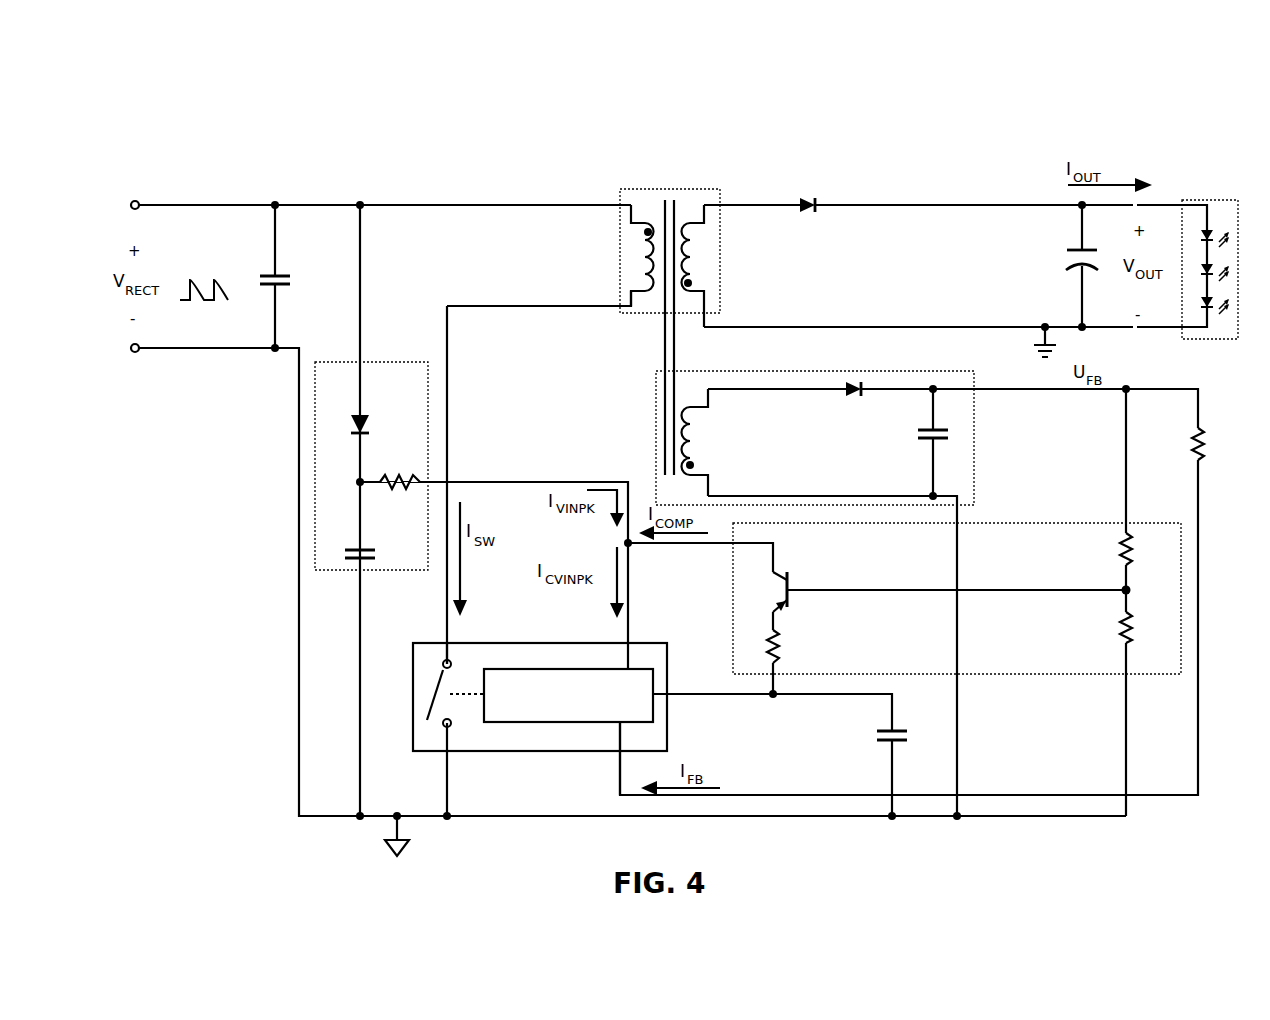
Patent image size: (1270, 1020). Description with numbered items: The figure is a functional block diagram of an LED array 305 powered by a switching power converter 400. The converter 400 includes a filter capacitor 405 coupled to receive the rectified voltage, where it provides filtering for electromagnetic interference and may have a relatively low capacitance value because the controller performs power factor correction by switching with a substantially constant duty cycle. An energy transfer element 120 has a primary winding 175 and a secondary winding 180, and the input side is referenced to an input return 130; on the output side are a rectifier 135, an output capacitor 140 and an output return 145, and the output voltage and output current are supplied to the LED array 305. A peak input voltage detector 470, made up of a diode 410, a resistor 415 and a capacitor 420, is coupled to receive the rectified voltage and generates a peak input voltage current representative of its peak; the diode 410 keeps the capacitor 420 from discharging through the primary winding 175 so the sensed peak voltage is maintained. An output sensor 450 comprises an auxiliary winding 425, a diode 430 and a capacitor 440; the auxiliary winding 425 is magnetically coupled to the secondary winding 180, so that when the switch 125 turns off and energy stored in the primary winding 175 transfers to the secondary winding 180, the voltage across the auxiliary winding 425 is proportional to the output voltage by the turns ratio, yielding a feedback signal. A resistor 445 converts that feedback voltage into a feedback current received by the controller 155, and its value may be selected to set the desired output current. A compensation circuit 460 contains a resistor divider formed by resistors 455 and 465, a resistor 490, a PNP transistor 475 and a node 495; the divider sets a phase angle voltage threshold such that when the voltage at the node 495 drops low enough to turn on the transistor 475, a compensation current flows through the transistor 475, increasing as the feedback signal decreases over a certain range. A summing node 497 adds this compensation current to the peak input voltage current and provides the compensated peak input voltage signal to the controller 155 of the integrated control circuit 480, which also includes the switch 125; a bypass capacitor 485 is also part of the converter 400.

The switching power converter 400 is at (1033, 109).
The filter capacitor 405 is at (288, 262).
The peak input voltage detector 470 is at (371, 443).
The diode 410 is at (373, 412).
The resistor 415 is at (400, 468).
The capacitor 420 is at (373, 547).
The energy transfer element 120 is at (663, 311).
The primary winding 175 is at (635, 255).
The secondary winding 180 is at (705, 268).
The rectifier 135 is at (806, 192).
The output capacitor 140 is at (1063, 258).
The output return 145 is at (1027, 355).
The LED array 305 is at (1212, 197).
The output sensor 450 is at (851, 438).
The auxiliary winding 425 is at (705, 435).
The diode 430 is at (855, 403).
The capacitor 440 is at (924, 446).
The resistor 445 is at (1187, 450).
The compensation circuit 460 is at (957, 575).
The transistor 475 is at (817, 560).
The resistor 490 is at (790, 647).
The resistor 455 is at (1109, 553).
The resistor 465 is at (1112, 633).
The node 495 is at (1133, 590).
The bypass capacitor 485 is at (934, 716).
The summing node 497 is at (637, 553).
The integrated control circuit 480 is at (520, 694).
The switch 125 is at (434, 692).
The controller 155 is at (587, 727).
The input return 130 is at (425, 842).